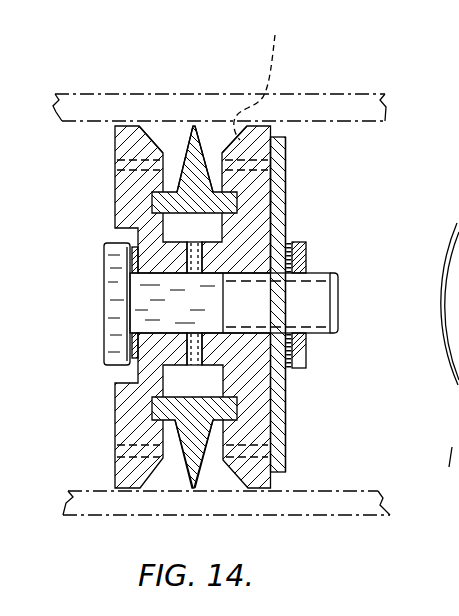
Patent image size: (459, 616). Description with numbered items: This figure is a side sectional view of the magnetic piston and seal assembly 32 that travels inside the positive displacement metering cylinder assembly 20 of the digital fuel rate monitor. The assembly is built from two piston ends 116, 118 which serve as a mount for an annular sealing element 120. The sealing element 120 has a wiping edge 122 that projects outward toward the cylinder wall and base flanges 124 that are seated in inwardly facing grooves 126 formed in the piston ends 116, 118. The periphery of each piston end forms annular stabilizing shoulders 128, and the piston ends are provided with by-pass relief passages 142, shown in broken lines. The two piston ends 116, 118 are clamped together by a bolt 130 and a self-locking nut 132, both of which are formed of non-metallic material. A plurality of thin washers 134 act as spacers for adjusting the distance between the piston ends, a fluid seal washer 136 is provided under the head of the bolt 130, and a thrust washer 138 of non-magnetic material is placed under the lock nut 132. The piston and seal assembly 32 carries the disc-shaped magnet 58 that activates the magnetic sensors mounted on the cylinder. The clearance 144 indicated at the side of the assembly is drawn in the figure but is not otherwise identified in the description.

The positive displacement metering cylinder assembly 20 is at (350, 91).
The magnetic piston and seal assembly 32 is at (297, 177).
The disc-shaped magnet 58 is at (300, 157).
The piston end 116 is at (114, 152).
The piston end 118 is at (252, 218).
The annular sealing element 120 is at (187, 143).
The wiping edge 122 is at (201, 126).
The base flanges 124 is at (116, 218).
The inwardly facing grooves 126 is at (150, 203).
The annular stabilizing shoulders 128 is at (124, 125).
The bolt 130 is at (106, 340).
The self-locking nut 132 is at (307, 257).
The thin washers 134 is at (187, 250).
The fluid seal washer 136 is at (126, 362).
The thrust washer 138 is at (306, 348).
The by-pass relief passages 142 is at (269, 75).
The clearance gap 144 is at (280, 198).